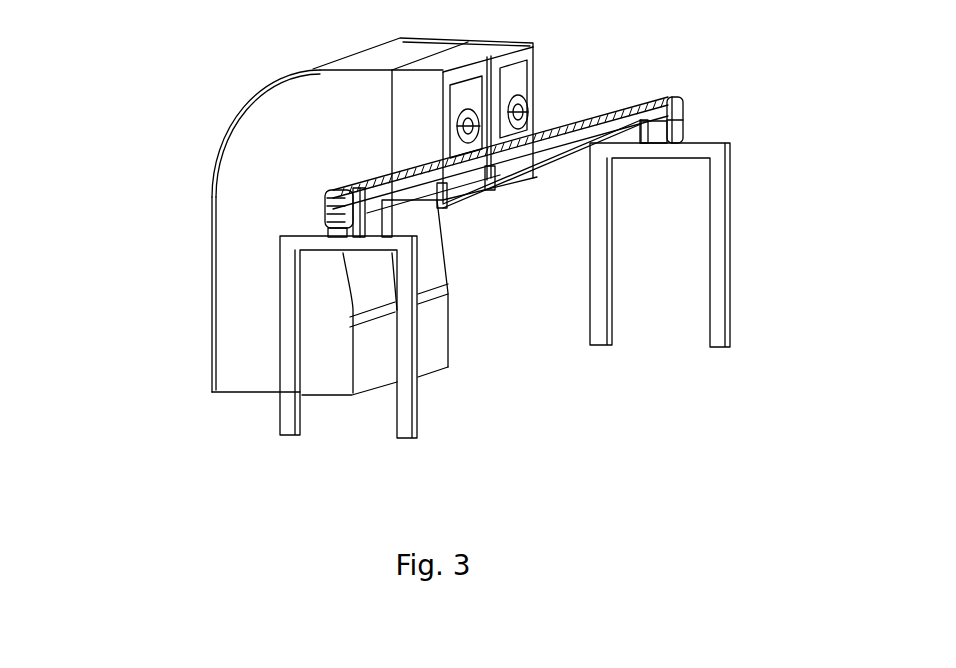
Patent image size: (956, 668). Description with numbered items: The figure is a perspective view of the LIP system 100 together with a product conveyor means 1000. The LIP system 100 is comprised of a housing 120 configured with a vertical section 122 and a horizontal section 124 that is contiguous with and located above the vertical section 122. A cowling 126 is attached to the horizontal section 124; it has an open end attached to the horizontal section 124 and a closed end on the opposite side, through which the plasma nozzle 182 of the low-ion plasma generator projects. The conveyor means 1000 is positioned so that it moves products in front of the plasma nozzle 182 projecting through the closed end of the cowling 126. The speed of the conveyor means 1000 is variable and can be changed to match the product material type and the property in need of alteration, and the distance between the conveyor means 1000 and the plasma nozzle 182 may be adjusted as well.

The LIP system 100 is at (200, 339).
The housing 120 is at (210, 260).
The vertical section 122 is at (267, 217).
The horizontal section 124 is at (340, 113).
The cowling 126 is at (533, 44).
The plasma nozzle 182 is at (527, 103).
The conveyor means 1000 is at (557, 140).